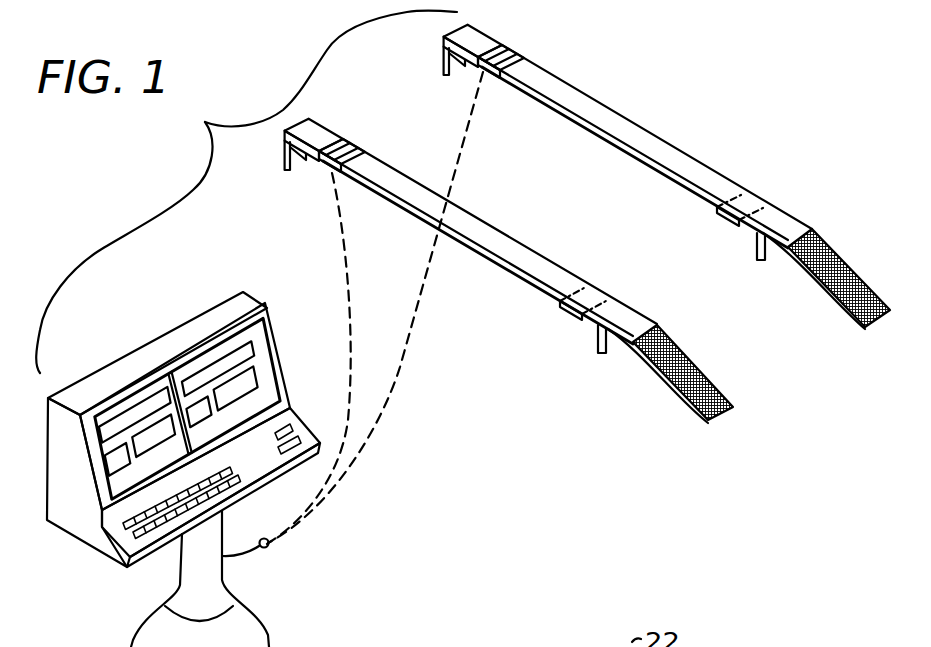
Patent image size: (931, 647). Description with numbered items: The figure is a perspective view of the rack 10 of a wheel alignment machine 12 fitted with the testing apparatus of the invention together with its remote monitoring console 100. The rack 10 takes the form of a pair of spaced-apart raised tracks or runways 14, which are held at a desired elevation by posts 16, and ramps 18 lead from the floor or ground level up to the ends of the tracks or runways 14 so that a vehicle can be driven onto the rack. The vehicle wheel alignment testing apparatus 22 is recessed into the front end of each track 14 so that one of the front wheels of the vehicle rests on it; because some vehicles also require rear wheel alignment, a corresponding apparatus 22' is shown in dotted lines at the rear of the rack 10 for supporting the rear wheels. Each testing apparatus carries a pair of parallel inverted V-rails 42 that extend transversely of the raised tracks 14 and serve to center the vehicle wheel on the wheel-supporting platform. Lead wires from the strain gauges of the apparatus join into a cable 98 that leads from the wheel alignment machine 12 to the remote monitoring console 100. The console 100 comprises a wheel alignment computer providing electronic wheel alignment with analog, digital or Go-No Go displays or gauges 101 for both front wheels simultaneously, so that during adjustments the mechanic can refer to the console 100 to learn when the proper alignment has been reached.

The rack 10 is at (580, 236).
The wheel alignment machine 12 is at (632, 125).
The tracks or runways 14 is at (703, 171).
The posts 16 is at (443, 58).
The ramps 18 is at (845, 268).
The vehicle wheel alignment testing apparatus 22 is at (437, 115).
The rear wheel testing apparatus 22' is at (705, 227).
The inverted V-rails 42 is at (481, 68).
The cable 98 is at (428, 285).
The remote monitoring console 100 is at (183, 440).
The displays or gauges 101 is at (248, 380).